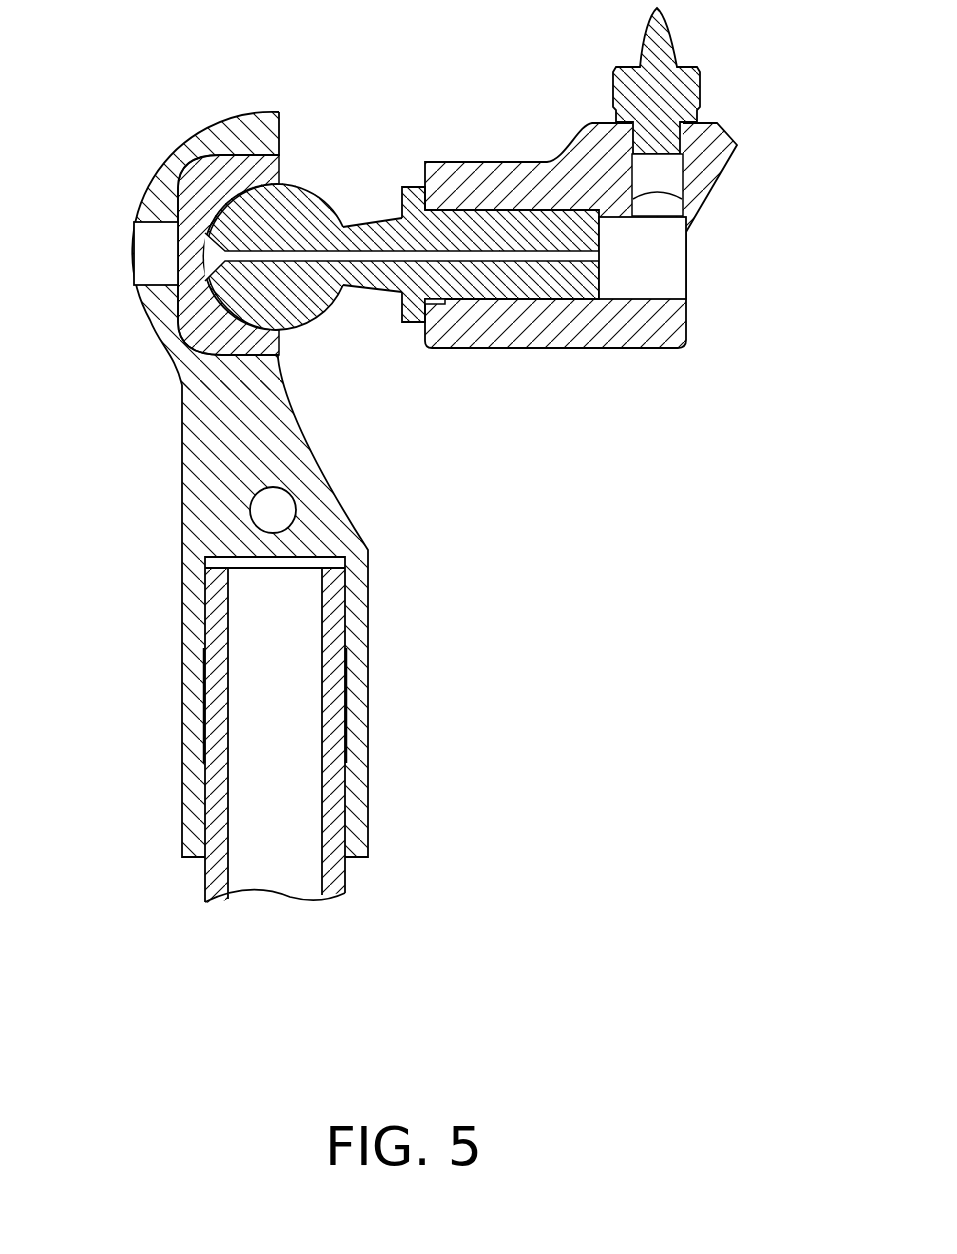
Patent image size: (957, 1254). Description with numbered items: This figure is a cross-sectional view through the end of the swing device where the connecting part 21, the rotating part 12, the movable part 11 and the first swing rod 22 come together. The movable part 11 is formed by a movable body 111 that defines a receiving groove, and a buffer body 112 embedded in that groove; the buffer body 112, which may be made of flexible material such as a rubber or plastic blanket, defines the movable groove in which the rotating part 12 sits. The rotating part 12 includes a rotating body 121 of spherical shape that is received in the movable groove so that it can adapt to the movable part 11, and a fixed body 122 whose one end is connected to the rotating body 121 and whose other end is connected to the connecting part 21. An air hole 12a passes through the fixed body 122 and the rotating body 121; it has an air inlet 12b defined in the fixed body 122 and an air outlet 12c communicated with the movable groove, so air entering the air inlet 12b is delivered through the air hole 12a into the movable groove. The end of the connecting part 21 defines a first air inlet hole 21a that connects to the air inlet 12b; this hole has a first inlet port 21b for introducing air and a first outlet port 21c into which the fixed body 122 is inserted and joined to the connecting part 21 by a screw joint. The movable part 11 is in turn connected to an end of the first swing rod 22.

The movable part 11 is at (70, 305).
The movable body 111 is at (223, 420).
The buffer body 112 is at (213, 335).
The rotating part 12 is at (489, 108).
The rotating body 121 is at (307, 205).
The fixed body 122 is at (445, 222).
The air hole 12a is at (362, 316).
The air inlet 12b is at (635, 279).
The air outlet 12c is at (300, 323).
The connecting part 21 is at (597, 270).
The first air inlet hole 21a is at (687, 258).
The first inlet port 21b is at (706, 112).
The first outlet port 21c is at (442, 358).
The first swing rod 22 is at (333, 823).